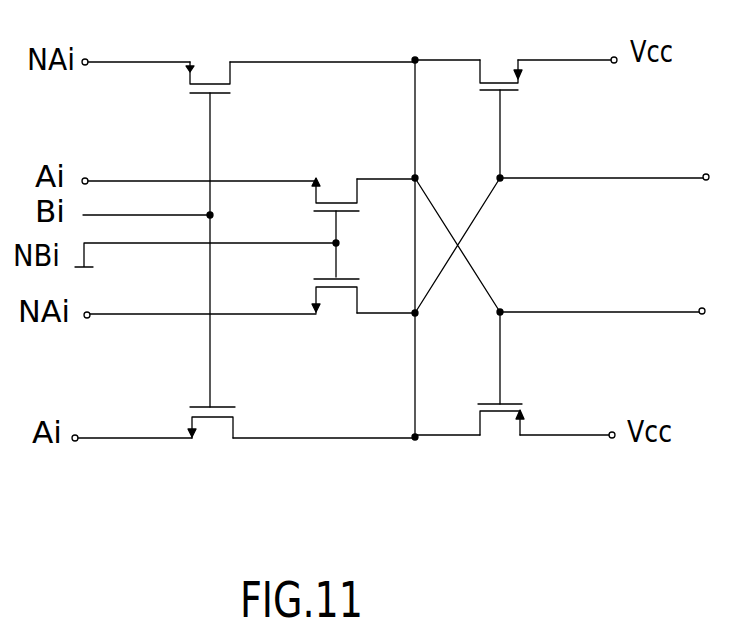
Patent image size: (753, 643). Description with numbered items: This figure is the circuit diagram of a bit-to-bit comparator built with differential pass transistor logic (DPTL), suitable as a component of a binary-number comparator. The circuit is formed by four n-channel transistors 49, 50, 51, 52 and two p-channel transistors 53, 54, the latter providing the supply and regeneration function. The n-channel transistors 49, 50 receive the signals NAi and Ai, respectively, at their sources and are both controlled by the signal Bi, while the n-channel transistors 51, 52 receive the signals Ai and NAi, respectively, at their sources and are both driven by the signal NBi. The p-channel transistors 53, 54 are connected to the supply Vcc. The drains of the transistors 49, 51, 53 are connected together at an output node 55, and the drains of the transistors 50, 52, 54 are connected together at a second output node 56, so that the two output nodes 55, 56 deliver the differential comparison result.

The n-channel transistor 49 is at (205, 84).
The n-channel transistor 50 is at (222, 417).
The n-channel transistor 51 is at (338, 203).
The n-channel transistor 52 is at (342, 287).
The p-channel transistor 53 is at (494, 83).
The p-channel transistor 54 is at (508, 411).
The output node 55 is at (621, 318).
The second output node 56 is at (623, 165).